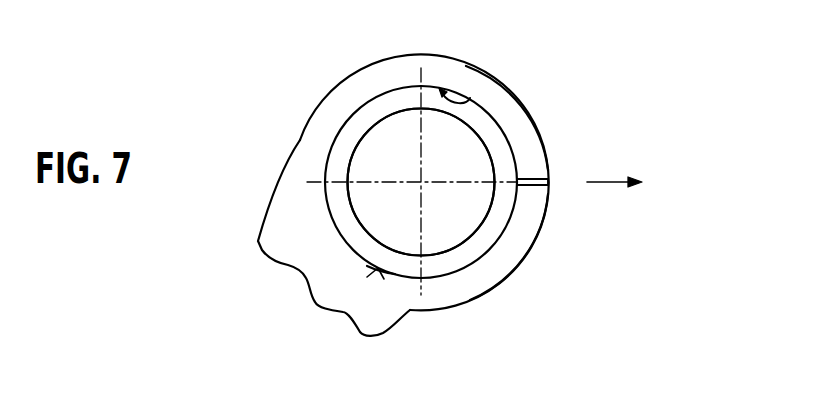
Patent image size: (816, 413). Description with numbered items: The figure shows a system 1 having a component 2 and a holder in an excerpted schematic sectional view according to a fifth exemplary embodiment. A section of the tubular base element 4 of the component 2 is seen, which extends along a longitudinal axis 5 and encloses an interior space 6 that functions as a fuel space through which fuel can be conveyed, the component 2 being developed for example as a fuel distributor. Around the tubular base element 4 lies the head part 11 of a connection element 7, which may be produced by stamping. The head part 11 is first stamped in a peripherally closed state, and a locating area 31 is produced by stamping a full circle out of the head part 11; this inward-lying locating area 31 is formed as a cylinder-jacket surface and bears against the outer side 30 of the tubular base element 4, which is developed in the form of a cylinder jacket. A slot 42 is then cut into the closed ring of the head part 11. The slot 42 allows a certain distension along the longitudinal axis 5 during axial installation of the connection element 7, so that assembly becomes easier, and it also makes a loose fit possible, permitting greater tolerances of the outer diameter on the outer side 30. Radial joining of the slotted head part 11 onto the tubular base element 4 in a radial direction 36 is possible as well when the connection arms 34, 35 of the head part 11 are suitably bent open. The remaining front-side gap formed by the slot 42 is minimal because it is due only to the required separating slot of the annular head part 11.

The system 1 is at (655, 58).
The component 2 is at (371, 113).
The tubular base element 4 is at (371, 113).
The longitudinal axis 5 is at (421, 183).
The interior space 6 is at (382, 158).
The connection element 7 is at (316, 247).
The head part 11 is at (401, 70).
The outer side 30 is at (378, 270).
The locating area 31 is at (470, 98).
The connection arm 34 is at (513, 113).
The connection arm 35 is at (516, 246).
The radial direction 36 is at (608, 182).
The slot 42 is at (537, 185).